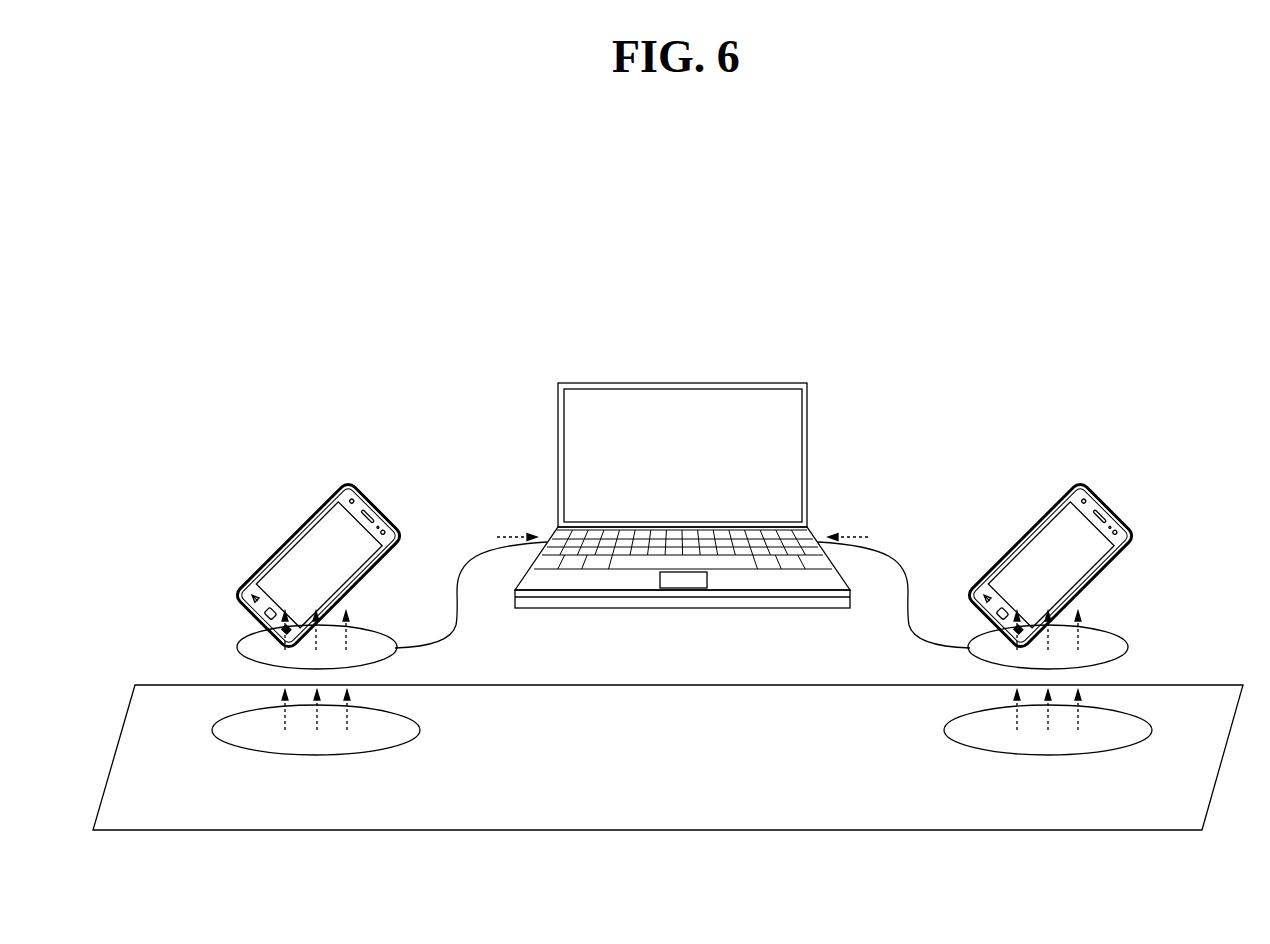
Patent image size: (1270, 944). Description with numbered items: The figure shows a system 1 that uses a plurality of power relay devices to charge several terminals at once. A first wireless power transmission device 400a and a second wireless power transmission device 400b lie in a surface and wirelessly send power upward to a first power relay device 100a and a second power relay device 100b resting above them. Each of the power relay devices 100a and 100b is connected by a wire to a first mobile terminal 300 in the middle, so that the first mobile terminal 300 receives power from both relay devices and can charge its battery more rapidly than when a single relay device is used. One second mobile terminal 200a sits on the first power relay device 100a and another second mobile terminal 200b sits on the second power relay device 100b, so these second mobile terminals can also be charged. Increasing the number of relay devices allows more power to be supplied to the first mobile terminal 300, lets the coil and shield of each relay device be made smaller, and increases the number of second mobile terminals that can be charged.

The system 1 is at (290, 346).
The first power relay device 100a is at (240, 641).
The second power relay device 100b is at (1107, 627).
The 2a-th mobile terminal 200a is at (313, 503).
The 2b-th mobile terminal 200b is at (1044, 503).
The first mobile terminal 300 is at (807, 408).
The first wireless power transmission device 400a is at (317, 755).
The second wireless power transmission device 400b is at (1048, 755).